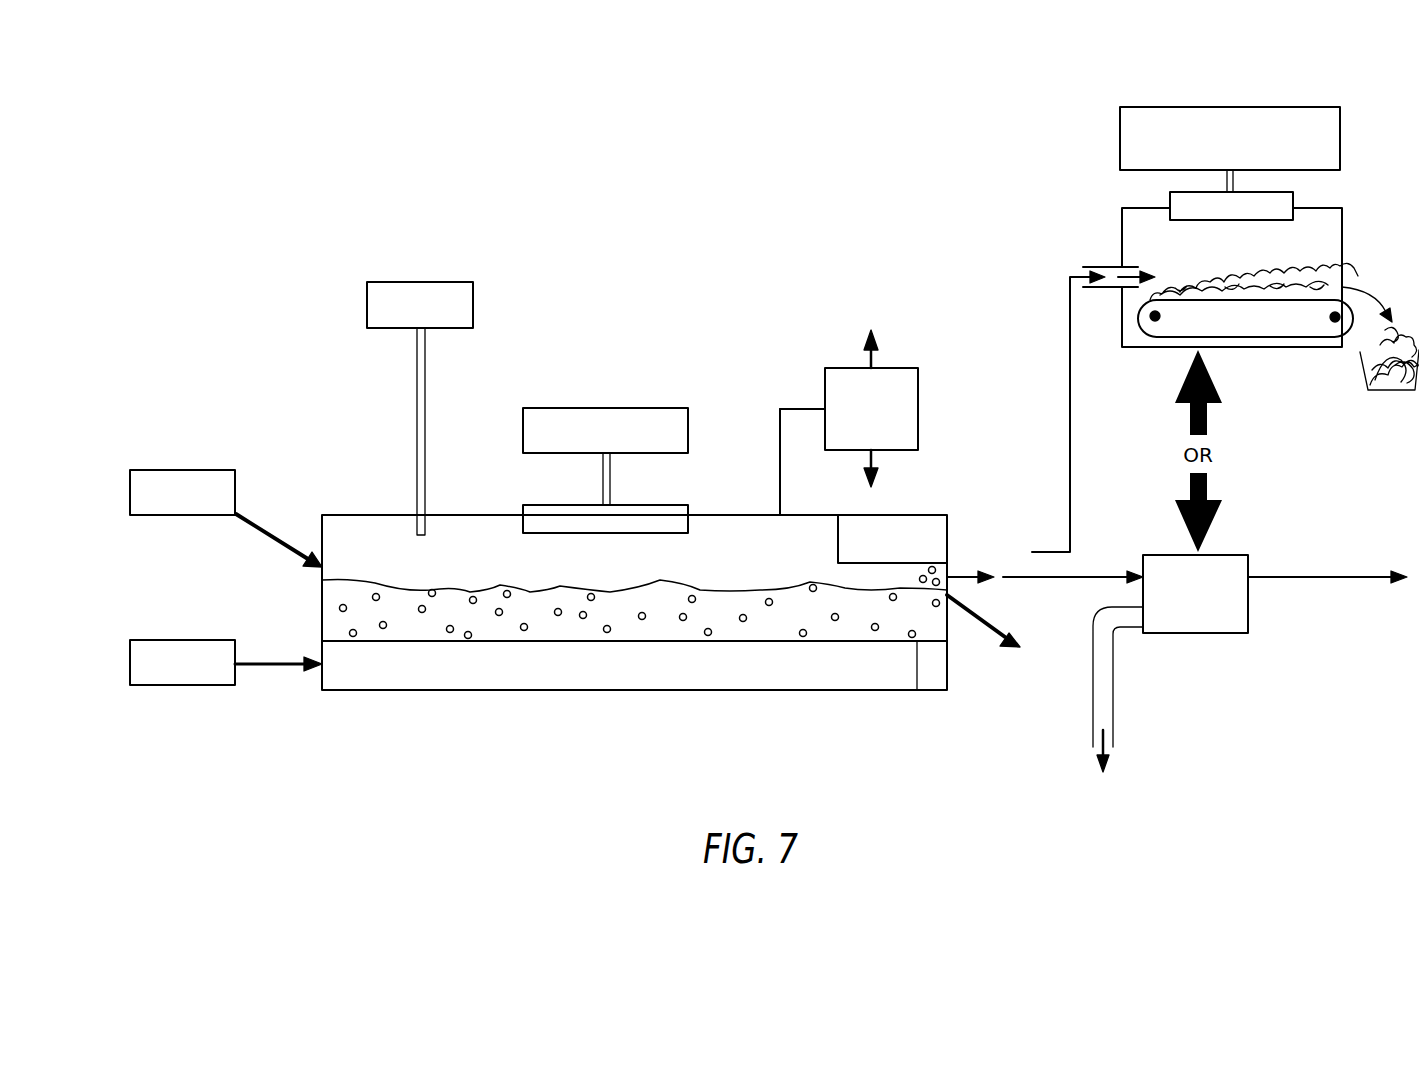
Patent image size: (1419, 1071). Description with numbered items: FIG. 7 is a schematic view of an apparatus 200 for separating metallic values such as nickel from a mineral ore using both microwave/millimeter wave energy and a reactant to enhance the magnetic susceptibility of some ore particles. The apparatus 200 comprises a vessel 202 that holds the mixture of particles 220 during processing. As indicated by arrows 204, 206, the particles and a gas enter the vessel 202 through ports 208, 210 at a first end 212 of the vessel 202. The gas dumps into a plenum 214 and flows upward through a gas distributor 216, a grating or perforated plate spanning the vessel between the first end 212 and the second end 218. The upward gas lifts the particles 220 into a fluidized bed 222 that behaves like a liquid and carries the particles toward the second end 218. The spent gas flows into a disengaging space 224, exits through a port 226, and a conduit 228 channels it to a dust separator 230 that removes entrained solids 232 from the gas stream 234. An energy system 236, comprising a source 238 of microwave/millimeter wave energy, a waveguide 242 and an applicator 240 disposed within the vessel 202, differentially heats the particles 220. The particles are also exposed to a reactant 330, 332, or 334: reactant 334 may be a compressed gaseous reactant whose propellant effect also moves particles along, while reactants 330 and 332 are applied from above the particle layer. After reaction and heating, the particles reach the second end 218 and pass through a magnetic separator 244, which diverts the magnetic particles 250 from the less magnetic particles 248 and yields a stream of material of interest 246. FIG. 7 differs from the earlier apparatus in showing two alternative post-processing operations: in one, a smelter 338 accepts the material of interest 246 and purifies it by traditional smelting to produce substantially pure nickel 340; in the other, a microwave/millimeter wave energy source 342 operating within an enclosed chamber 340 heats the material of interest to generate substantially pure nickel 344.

The apparatus 200 is at (920, 298).
The vessel 202 is at (388, 513).
The arrow 204 is at (262, 528).
The arrow 206 is at (283, 668).
The port 208 is at (345, 557).
The port 210 is at (323, 664).
The first end 212 is at (262, 620).
The plenum 214 is at (822, 682).
The gas distributor 216 is at (383, 643).
The second end 218 is at (1020, 514).
The particles 220 is at (609, 632).
The fluidized bed 222 is at (733, 630).
The disengaging space 224 is at (462, 557).
The port 226 is at (778, 520).
The conduit 228 is at (778, 436).
The dust separator 230 is at (918, 390).
The entrained solids 232 is at (874, 465).
The gas stream 234 is at (866, 354).
The energy system 236 is at (508, 405).
The source 238 is at (660, 408).
The applicator 240 is at (523, 514).
The waveguide 242 is at (612, 477).
The magnetic separator 244 is at (940, 530).
The material of interest 246 is at (960, 567).
The particles with less significant magnetic properties 248 is at (1005, 636).
The magnetic particles 250 is at (915, 590).
The reactant 330 is at (468, 284).
The reactant 332 is at (170, 470).
The reactant 334 is at (170, 640).
The smelter 338 is at (1230, 633).
The substantially pure nickel 340 is at (1130, 208).
The microwave/millimeter wave energy source 342 is at (1118, 125).
The substantially pure nickel 344 is at (1412, 330).